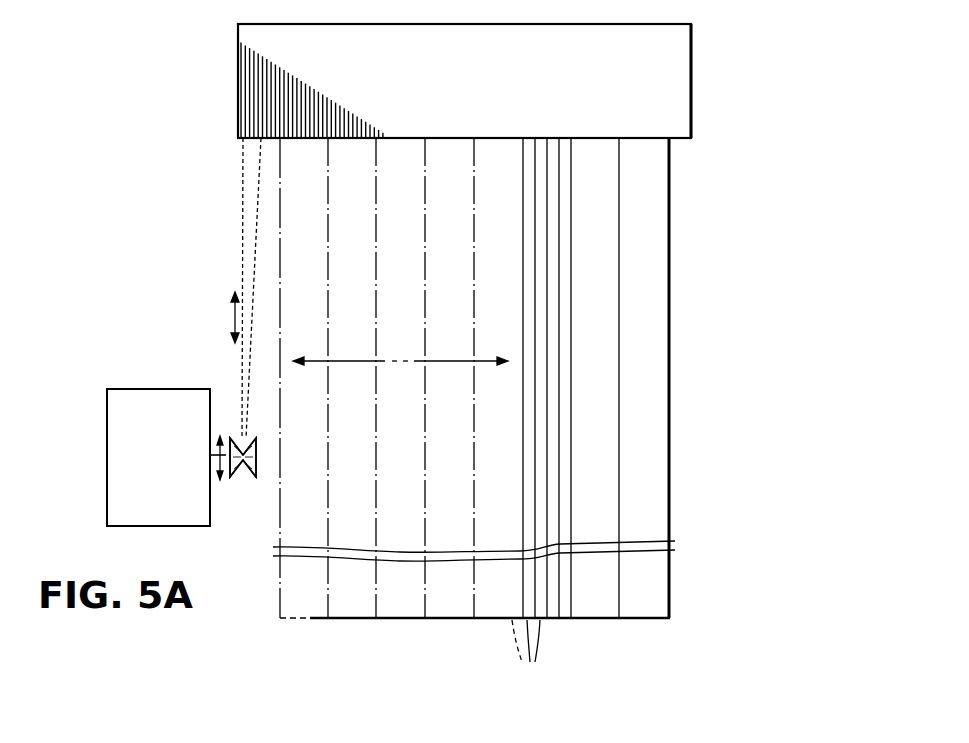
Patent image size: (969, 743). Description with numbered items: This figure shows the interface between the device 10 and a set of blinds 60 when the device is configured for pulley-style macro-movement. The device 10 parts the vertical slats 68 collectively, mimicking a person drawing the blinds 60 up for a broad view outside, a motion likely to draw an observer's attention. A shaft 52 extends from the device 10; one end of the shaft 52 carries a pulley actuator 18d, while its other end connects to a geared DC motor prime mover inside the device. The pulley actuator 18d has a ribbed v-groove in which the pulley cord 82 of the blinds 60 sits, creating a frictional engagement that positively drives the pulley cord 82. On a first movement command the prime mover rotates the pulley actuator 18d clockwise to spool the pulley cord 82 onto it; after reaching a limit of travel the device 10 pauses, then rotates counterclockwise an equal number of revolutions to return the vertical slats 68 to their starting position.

The blinds 60 is at (727, 101).
The pulley cord 82 is at (242, 222).
The device 10 is at (142, 389).
The shaft 52 is at (228, 455).
The pulley actuator 18d is at (250, 478).
The vertical slats 68 is at (524, 657).